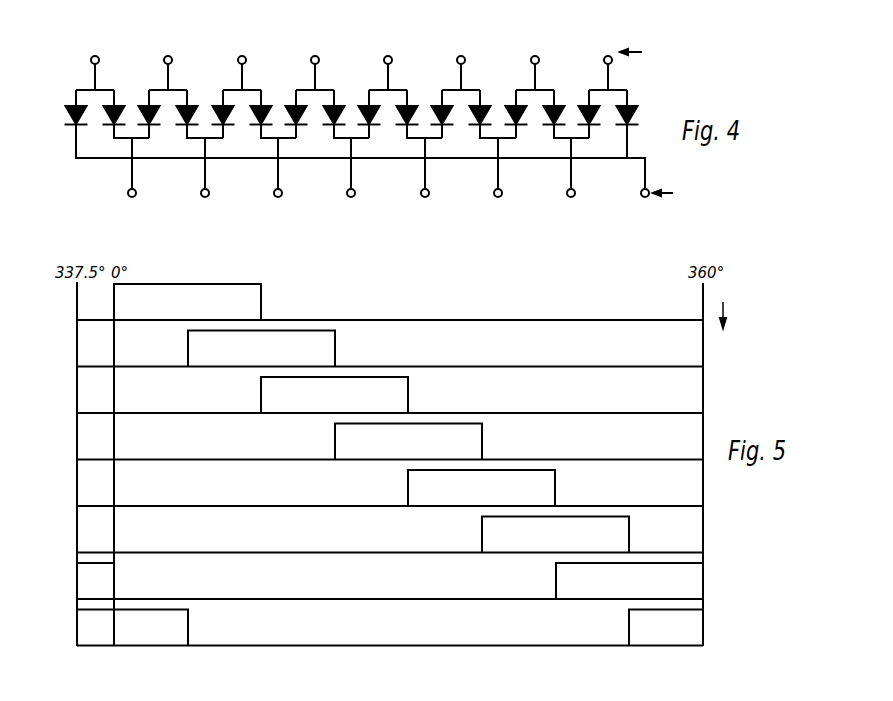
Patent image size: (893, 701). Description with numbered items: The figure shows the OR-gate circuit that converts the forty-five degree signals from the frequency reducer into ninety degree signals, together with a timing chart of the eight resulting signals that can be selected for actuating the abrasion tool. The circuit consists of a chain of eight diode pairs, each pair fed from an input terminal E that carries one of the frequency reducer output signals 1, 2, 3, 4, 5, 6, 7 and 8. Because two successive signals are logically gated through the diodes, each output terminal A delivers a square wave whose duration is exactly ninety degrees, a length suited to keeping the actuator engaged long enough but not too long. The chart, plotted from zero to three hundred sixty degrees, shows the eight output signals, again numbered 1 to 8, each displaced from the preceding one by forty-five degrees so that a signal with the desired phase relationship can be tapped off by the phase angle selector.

In FIG. 4, the output 1 is at (107, 124).
In FIG. 5, the output 1 is at (397, 306).
In FIG. 4, the output 2 is at (181, 124).
In FIG. 5, the output 2 is at (397, 354).
In FIG. 4, the output 3 is at (254, 124).
In FIG. 5, the output 3 is at (397, 399).
In FIG. 4, the output 4 is at (327, 124).
In FIG. 5, the output 4 is at (397, 447).
In FIG. 4, the output 5 is at (400, 124).
In FIG. 5, the output 5 is at (397, 492).
In FIG. 4, the output 6 is at (474, 124).
In FIG. 5, the output 6 is at (397, 540).
In FIG. 4, the output 7 is at (547, 124).
In FIG. 5, the output 7 is at (397, 585).
In FIG. 4, the output 8 is at (614, 124).
In FIG. 5, the output 8 is at (397, 633).